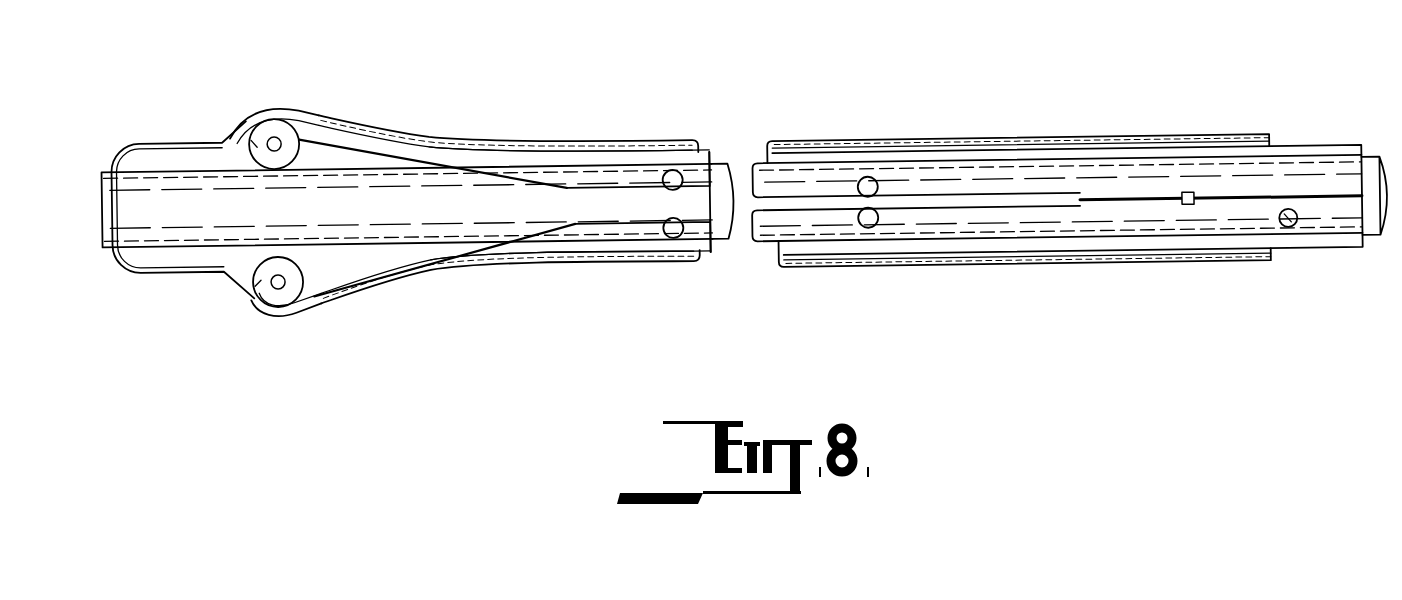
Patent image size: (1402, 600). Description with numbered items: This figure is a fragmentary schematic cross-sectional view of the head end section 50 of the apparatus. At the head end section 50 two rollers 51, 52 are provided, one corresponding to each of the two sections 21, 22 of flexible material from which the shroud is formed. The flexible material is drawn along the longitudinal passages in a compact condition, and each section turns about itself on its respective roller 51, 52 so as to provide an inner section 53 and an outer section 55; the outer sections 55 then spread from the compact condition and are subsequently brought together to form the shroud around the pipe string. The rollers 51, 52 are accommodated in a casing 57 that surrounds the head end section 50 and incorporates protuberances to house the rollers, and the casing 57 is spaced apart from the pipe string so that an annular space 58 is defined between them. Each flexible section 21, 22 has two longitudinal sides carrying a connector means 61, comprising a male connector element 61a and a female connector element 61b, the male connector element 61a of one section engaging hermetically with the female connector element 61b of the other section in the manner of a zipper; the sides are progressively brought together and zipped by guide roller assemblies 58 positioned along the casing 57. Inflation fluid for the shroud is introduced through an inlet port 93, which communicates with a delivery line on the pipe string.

The head end section 50 is at (118, 134).
The roller 51 is at (254, 125).
The roller 52 is at (269, 288).
The inner section 53 is at (291, 125).
The outer section 55 is at (354, 126).
The casing 57 is at (476, 141).
The section of flexible material 21 is at (318, 126).
The section of flexible material 22 is at (369, 282).
The annular space 58 is at (660, 172).
The connector means 61 is at (1301, 202).
The male connector element 61a is at (792, 178).
The female connector element 61b is at (808, 217).
The inlet port 93 is at (1289, 242).